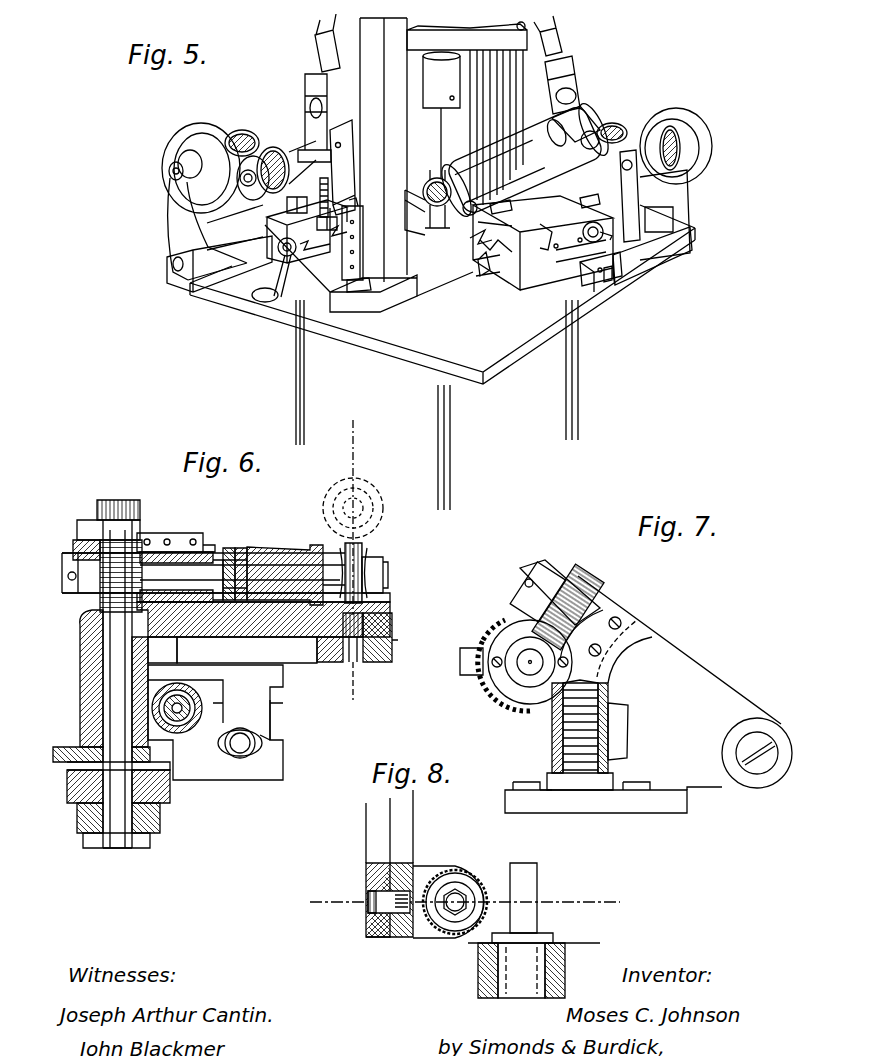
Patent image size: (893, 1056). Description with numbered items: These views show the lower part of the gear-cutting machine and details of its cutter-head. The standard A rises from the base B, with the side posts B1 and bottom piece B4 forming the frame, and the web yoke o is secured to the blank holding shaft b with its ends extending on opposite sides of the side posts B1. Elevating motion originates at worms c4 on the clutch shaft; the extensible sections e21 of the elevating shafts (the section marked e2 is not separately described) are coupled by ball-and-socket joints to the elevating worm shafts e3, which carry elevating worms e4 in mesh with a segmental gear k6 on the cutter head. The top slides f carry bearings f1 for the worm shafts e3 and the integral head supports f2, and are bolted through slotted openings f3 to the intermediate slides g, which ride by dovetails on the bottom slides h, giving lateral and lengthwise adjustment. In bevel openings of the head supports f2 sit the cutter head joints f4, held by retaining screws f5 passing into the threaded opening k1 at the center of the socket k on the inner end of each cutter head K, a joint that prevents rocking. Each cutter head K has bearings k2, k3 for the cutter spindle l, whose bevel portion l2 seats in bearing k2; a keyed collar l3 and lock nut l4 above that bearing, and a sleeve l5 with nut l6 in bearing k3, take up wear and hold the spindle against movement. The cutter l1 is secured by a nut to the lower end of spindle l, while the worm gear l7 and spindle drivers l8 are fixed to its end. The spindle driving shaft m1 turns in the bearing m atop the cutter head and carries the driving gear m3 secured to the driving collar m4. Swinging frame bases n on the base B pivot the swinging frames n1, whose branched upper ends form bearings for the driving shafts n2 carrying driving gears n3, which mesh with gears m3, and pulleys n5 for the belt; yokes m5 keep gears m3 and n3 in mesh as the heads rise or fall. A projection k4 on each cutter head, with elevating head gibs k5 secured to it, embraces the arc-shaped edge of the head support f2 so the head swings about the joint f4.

In FIG. 5, the standard A is at (442, 357).
In FIG. 5, the base B is at (369, 271).
In FIG. 5, the side posts B1 is at (424, 150).
In FIG. 5, the bottom piece B4 is at (448, 280).
In FIG. 5, the blank holding shaft b is at (441, 115).
In FIG. 5, the web yoke o is at (496, 44).
In FIG. 5, the rod e2 is at (318, 43).
In FIG. 5, the extensible section of elevating shaft e21 is at (559, 31).
In FIG. 5, the elevating worm shaft e3 is at (306, 110).
In FIG. 6, the elevating worm shaft e3 is at (170, 736).
In FIG. 7, the elevating worm shaft e3 is at (554, 762).
In FIG. 8, the elevating worm shaft e3 is at (534, 930).
In FIG. 6, the elevating worm e4 is at (184, 728).
In FIG. 7, the elevating worm e4 is at (564, 720).
In FIG. 5, the top slide f is at (520, 228).
In FIG. 6, the top slide f is at (215, 722).
In FIG. 7, the top slide f is at (661, 804).
In FIG. 5, the bearing for elevating worm shaft f1 is at (303, 162).
In FIG. 6, the bearing for elevating worm shaft f1 is at (205, 730).
In FIG. 7, the bearing for elevating worm shaft f1 is at (554, 736).
In FIG. 6, the head support f2 is at (292, 660).
In FIG. 7, the head support f2 is at (674, 696).
In FIG. 8, the head support f2 is at (370, 838).
In FIG. 6, the slotted opening f3 is at (274, 716).
In FIG. 6, the cutter head joint f4 is at (330, 664).
In FIG. 7, the cutter head joint f4 is at (743, 740).
In FIG. 8, the cutter head joint f4 is at (366, 884).
In FIG. 6, the retaining screw f5 is at (380, 669).
In FIG. 7, the retaining screw f5 is at (760, 750).
In FIG. 8, the retaining screw f5 is at (368, 908).
In FIG. 5, the intermediate slide g is at (307, 231).
In FIG. 5, the bottom slide h is at (316, 262).
In FIG. 5, the socket k is at (356, 245).
In FIG. 6, the socket k is at (361, 637).
In FIG. 8, the socket k is at (391, 937).
In FIG. 6, the screw threaded opening k1 is at (372, 620).
In FIG. 8, the screw threaded opening k1 is at (412, 878).
In FIG. 6, the cutter bearing k2 is at (296, 548).
In FIG. 6, the spindle bearing k3 is at (172, 540).
In FIG. 6, the projection k4 is at (162, 650).
In FIG. 6, the elevating head gib k5 is at (222, 674).
In FIG. 7, the elevating head gib k5 is at (640, 636).
In FIG. 5, the segmental gear k6 is at (350, 190).
In FIG. 6, the segmental gear k6 is at (289, 719).
In FIG. 7, the segmental gear k6 is at (628, 728).
In FIG. 6, the cutter head K is at (254, 537).
In FIG. 6, the cutter spindle l is at (155, 548).
In FIG. 5, the cutter l1 is at (432, 178).
In FIG. 6, the cutter l1 is at (362, 552).
In FIG. 8, the cutter l1 is at (478, 878).
In FIG. 6, the bevel portion l2 is at (280, 548).
In FIG. 6, the collar l3 is at (244, 548).
In FIG. 6, the lock nut l4 is at (230, 548).
In FIG. 6, the sleeve l5 is at (205, 546).
In FIG. 6, the nut l6 is at (218, 556).
In FIG. 6, the worm gear l7 is at (108, 542).
In FIG. 7, the worm gear l7 is at (590, 586).
In FIG. 6, the spindle driver l8 is at (78, 576).
In FIG. 6, the spindle driving shaft bearing m is at (86, 652).
In FIG. 6, the spindle driving shaft m1 is at (108, 680).
In FIG. 5, the driving gear m3 is at (276, 147).
In FIG. 6, the driving gear m3 is at (172, 796).
In FIG. 7, the driving gear m3 is at (503, 672).
In FIG. 5, the driving collar m4 is at (582, 122).
In FIG. 6, the driving collar m4 is at (162, 826).
In FIG. 7, the driving collar m4 is at (505, 700).
In FIG. 6, the yoke m5 is at (100, 742).
In FIG. 7, the yoke m5 is at (470, 646).
In FIG. 5, the swinging frame base n is at (209, 264).
In FIG. 5, the swinging frame n1 is at (172, 222).
In FIG. 5, the driving shaft n2 is at (168, 172).
In FIG. 5, the driving gear n3 is at (240, 130).
In FIG. 5, the pulley n5 is at (197, 126).
In FIG. 5, the worm c4 is at (312, 204).